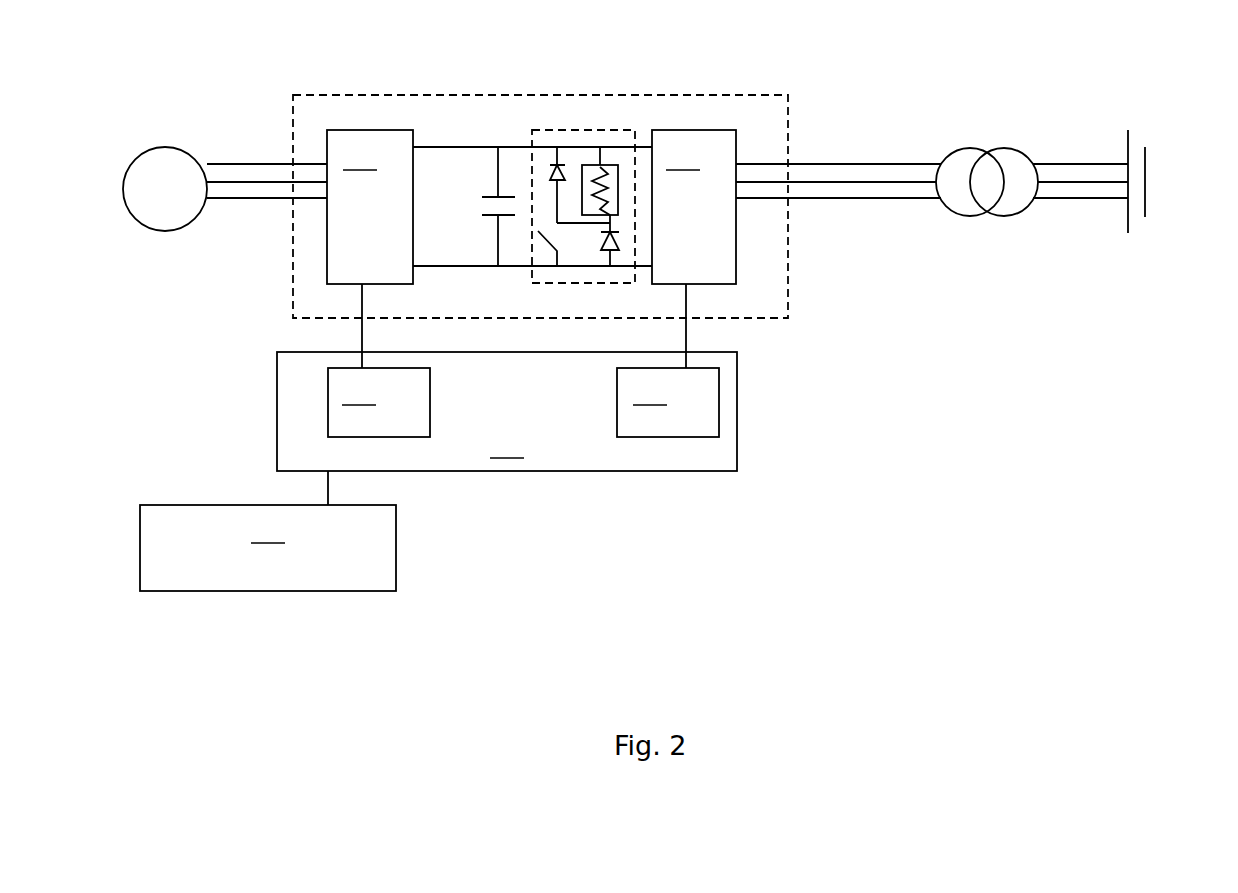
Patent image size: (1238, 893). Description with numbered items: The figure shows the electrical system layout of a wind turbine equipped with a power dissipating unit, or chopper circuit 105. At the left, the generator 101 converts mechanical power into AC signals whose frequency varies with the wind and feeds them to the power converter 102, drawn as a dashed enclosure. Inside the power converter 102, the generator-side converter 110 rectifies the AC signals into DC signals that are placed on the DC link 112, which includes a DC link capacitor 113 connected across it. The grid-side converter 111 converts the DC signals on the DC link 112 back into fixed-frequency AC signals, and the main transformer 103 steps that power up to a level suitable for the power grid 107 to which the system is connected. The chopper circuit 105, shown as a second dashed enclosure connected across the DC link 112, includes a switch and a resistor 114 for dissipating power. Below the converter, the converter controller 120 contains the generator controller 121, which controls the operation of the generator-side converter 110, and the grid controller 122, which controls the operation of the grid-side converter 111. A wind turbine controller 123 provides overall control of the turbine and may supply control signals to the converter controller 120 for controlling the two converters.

The generator 101 is at (158, 147).
The power converter 102 is at (462, 95).
The main transformer 103 is at (1000, 148).
The chopper circuit 105 is at (550, 130).
The power grid 107 is at (1146, 163).
The generator-side converter 110 is at (370, 207).
The grid-side converter 111 is at (694, 207).
The DC link 112 is at (432, 147).
The DC link capacitor 113 is at (490, 214).
The resistor 114 is at (609, 163).
The converter controller 120 is at (507, 411).
The generator controller 121 is at (379, 402).
The grid controller 122 is at (668, 402).
The wind turbine controller 123 is at (268, 548).